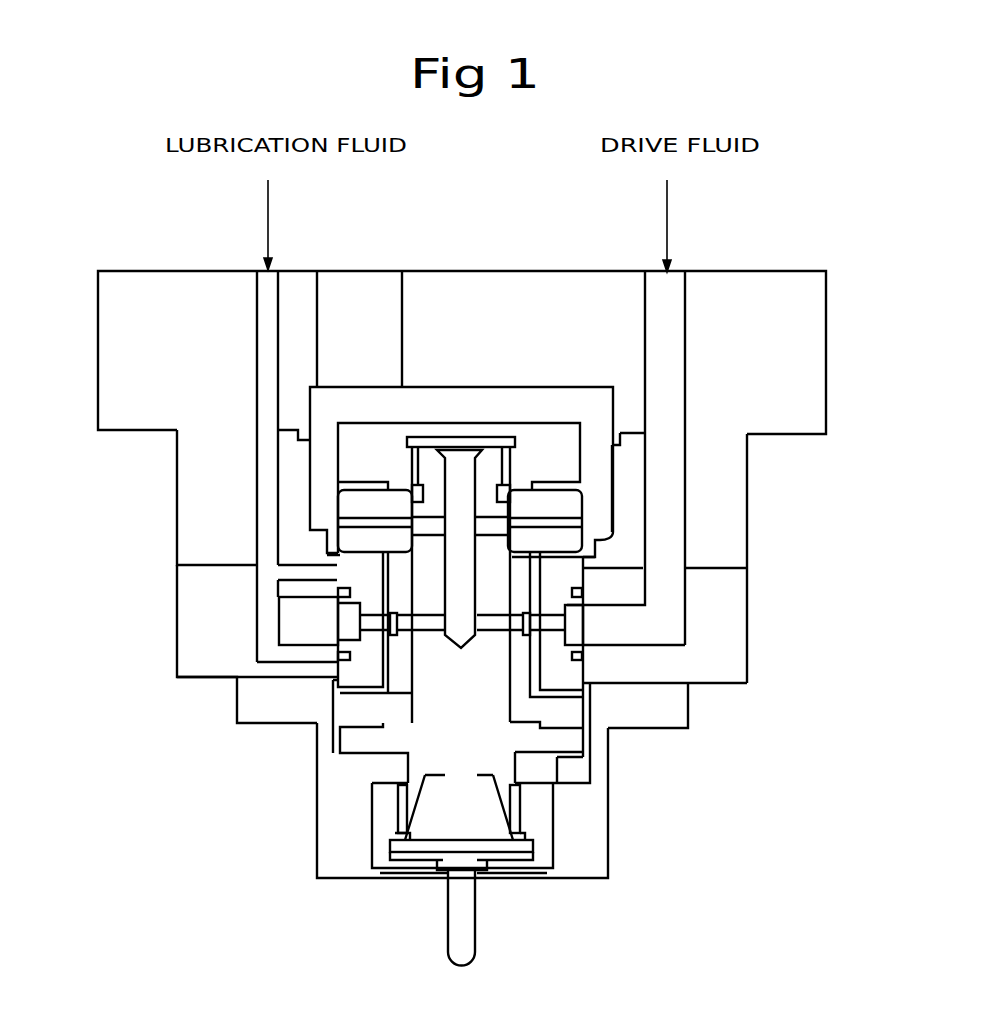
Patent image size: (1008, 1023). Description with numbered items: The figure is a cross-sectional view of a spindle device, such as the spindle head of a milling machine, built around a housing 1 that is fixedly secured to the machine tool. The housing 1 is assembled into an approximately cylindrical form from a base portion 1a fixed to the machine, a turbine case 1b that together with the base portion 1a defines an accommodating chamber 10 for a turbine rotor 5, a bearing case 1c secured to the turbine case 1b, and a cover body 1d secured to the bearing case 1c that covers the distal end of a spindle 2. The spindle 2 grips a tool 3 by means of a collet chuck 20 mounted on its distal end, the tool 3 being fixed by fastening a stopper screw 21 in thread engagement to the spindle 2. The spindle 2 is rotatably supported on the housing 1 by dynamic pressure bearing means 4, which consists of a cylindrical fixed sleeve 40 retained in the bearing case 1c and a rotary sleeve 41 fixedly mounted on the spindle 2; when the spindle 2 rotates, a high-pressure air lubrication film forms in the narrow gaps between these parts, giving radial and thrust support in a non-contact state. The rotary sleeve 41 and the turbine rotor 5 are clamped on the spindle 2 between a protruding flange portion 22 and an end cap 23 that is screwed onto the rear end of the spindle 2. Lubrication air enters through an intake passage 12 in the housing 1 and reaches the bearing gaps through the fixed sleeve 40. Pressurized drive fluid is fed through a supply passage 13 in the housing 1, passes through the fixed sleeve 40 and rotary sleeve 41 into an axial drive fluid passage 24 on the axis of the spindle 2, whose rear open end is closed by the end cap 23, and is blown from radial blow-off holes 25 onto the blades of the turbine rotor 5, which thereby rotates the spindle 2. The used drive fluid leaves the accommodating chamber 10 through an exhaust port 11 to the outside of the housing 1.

The housing 1 is at (160, 542).
The base portion 1a is at (826, 383).
The turbine case 1b is at (747, 553).
The bearing case 1c is at (747, 625).
The cover body 1d is at (608, 870).
The spindle 2 is at (393, 768).
The tool 3 is at (473, 920).
The dynamic pressure bearing means 4 is at (587, 667).
The turbine rotor 5 is at (583, 507).
The accommodating chamber 10 is at (533, 410).
The exhaust port 11 is at (360, 287).
The intake passage 12 is at (265, 309).
The supply passage 13 is at (675, 318).
The collet chuck 20 is at (432, 842).
The stopper screw 21 is at (380, 828).
The flange portion 22 is at (562, 740).
The end cap 23 is at (555, 440).
The drive fluid passage 24 is at (455, 548).
The blow-off holes 25 is at (430, 523).
The fixed sleeve 40 is at (355, 672).
The rotary sleeve 41 is at (353, 707).